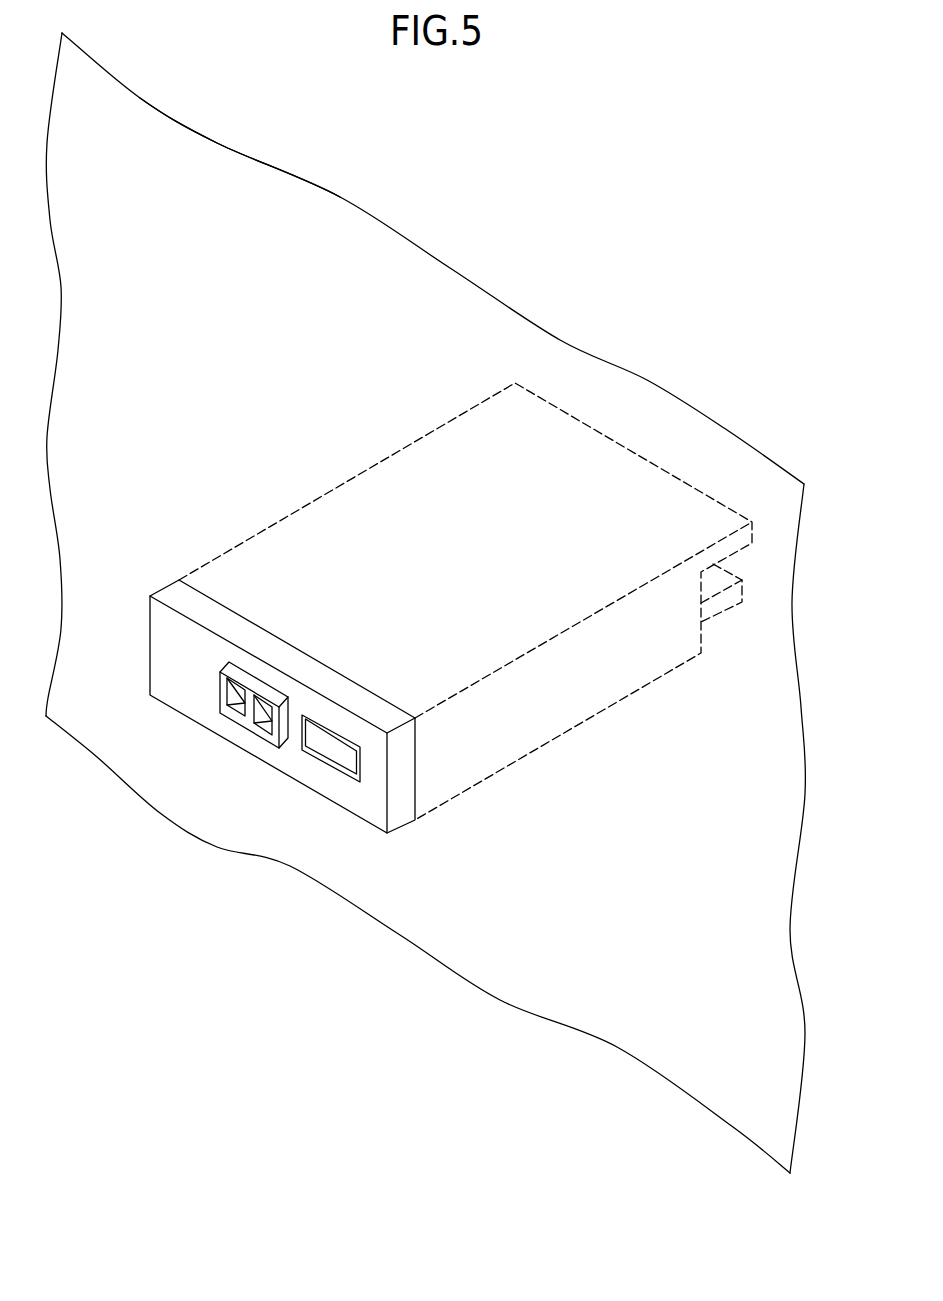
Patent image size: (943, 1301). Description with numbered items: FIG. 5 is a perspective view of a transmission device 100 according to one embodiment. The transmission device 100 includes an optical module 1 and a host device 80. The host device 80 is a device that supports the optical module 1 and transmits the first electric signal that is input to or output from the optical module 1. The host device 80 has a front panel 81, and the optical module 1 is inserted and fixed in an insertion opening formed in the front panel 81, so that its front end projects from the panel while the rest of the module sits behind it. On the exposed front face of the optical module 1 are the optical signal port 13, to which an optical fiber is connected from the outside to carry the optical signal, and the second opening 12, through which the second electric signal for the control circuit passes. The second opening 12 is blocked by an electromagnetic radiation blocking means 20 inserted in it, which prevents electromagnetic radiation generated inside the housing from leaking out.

The optical module 1 is at (158, 580).
The second opening 12 is at (316, 761).
The optical signal port 13 is at (246, 727).
The electromagnetic radiation blocking means 20 is at (330, 745).
The host device 80 is at (632, 330).
The front panel 81 is at (221, 170).
The transmission device 100 is at (273, 882).